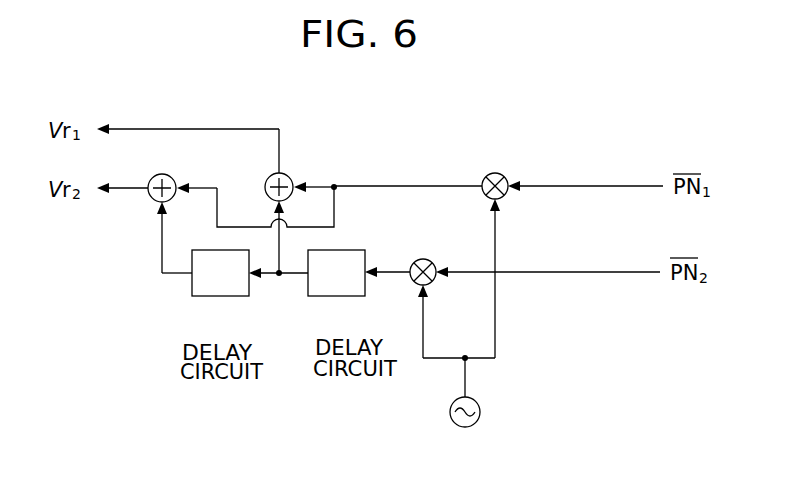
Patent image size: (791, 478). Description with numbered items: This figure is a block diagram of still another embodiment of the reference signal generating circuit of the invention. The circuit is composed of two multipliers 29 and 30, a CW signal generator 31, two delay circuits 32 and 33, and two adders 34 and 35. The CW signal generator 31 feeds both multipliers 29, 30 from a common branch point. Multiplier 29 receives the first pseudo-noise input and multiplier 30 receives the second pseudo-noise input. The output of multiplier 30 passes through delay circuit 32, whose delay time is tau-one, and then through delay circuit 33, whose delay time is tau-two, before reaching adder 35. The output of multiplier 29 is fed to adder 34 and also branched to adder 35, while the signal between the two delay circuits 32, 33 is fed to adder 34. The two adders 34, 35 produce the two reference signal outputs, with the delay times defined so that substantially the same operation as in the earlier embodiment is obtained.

The multiplier 29 is at (500, 173).
The multiplier 30 is at (424, 259).
The CW signal generator 31 is at (480, 412).
The delay circuit 32 is at (331, 290).
The delay circuit 33 is at (200, 291).
The adder 34 is at (289, 176).
The adder 35 is at (172, 178).